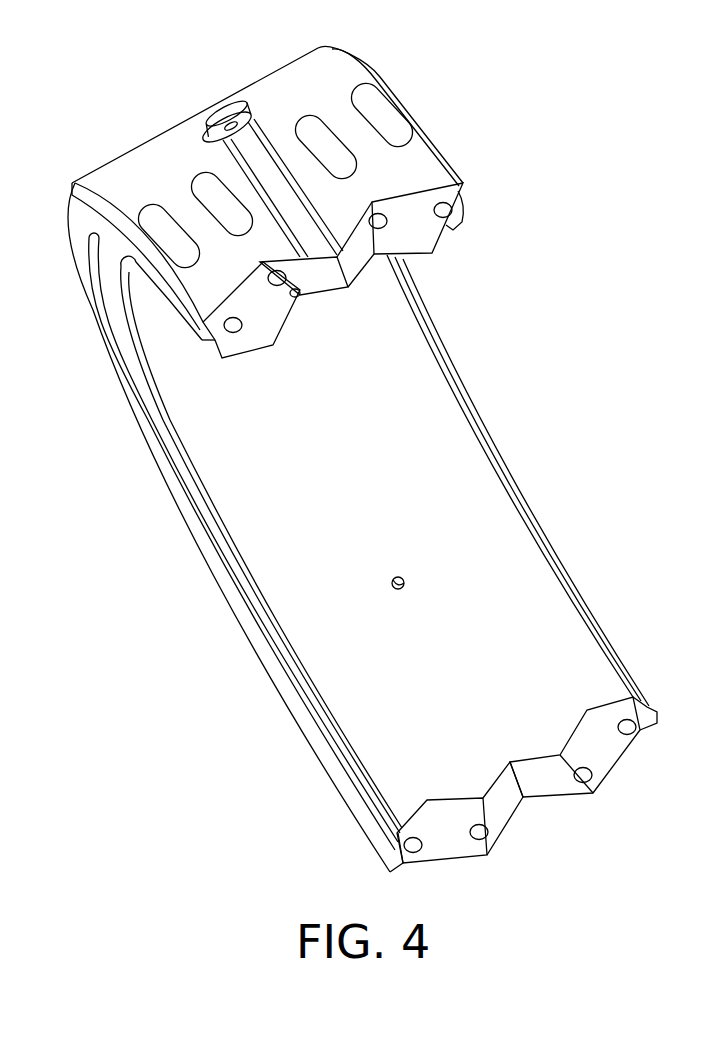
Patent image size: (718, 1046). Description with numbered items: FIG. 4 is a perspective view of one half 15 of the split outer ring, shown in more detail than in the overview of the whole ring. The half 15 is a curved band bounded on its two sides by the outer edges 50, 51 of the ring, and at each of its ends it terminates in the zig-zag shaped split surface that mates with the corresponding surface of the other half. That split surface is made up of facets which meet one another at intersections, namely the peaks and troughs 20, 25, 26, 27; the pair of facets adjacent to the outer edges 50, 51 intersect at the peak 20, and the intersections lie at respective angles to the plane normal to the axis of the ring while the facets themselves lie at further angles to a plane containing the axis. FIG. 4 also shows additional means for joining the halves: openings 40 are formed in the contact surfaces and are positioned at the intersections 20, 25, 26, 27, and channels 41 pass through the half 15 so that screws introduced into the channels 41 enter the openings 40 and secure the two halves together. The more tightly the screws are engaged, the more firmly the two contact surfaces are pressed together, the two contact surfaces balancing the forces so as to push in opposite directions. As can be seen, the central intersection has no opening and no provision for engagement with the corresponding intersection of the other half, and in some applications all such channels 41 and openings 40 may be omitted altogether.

The half of the split outer ring 15 is at (432, 465).
The peak 20 is at (447, 232).
The intersection 25 is at (400, 252).
The intersection 26 is at (418, 305).
The intersection 27 is at (302, 296).
The openings 40 is at (453, 207).
The channels 41 is at (387, 117).
The outer edge 50 is at (200, 522).
The outer edge 51 is at (545, 532).